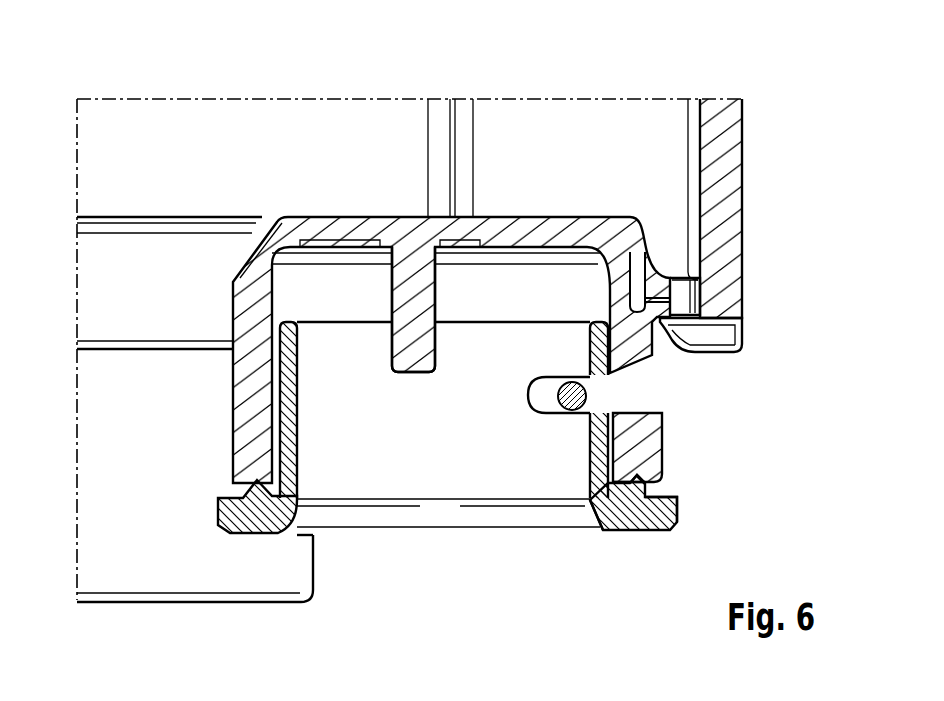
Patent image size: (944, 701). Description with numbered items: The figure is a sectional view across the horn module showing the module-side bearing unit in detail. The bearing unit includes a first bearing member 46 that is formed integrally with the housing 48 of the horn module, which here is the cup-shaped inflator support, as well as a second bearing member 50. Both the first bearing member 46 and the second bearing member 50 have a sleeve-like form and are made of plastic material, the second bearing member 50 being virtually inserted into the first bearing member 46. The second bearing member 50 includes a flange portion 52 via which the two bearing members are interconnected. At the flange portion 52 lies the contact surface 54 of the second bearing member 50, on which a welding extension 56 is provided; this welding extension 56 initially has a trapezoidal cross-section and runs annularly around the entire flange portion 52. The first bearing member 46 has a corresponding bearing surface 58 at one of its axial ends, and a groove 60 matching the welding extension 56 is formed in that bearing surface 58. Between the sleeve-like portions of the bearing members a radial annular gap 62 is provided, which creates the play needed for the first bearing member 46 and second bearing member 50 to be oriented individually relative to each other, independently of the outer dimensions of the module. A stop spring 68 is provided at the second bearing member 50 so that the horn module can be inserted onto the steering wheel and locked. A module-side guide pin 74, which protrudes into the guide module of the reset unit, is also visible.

The first bearing member 46 is at (652, 445).
The housing 48 is at (732, 225).
The second bearing member 50 is at (597, 338).
The flange portion 52 is at (652, 517).
The contact surface 54 is at (660, 497).
The welding extension 56 is at (632, 477).
The bearing surface 58 is at (642, 488).
The groove 60 is at (603, 500).
The radial annular gap 62 is at (290, 438).
The stop spring 68 is at (585, 386).
The module-side guide pin 74 is at (412, 262).